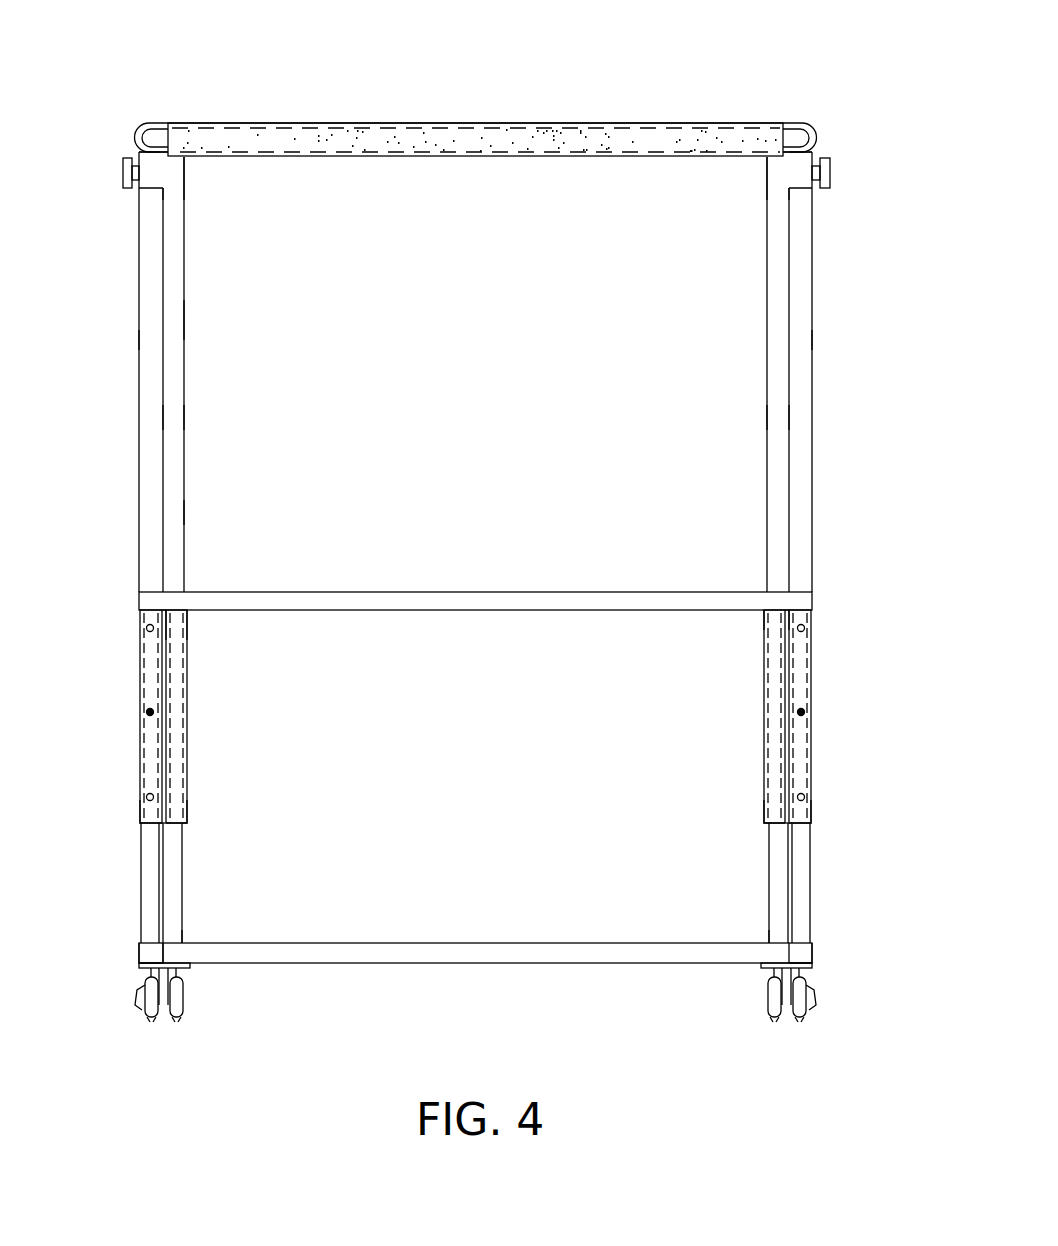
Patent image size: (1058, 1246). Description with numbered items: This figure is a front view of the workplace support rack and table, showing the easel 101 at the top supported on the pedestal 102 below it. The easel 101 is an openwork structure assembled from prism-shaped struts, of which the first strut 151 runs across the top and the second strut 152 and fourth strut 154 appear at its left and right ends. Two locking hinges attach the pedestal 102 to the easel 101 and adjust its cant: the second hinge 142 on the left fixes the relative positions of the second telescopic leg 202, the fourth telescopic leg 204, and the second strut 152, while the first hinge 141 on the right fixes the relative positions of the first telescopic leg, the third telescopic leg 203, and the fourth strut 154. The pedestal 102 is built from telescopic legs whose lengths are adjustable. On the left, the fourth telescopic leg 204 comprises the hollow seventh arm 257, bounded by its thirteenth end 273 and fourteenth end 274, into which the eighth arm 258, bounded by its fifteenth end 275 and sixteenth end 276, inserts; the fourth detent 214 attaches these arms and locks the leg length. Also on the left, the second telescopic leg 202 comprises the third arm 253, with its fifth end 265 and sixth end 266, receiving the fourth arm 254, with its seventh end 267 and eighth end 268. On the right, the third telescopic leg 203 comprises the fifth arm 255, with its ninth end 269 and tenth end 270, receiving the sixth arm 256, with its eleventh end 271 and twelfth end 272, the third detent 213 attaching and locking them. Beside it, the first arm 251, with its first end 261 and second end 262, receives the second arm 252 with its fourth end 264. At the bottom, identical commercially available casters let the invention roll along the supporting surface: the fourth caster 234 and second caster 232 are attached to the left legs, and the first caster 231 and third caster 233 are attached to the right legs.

The easel 101 is at (489, 122).
The first strut 151 is at (403, 122).
The second strut 152 is at (145, 125).
The fourth strut 154 is at (810, 125).
The thirteenth end 273 is at (143, 146).
The ninth end 269 is at (814, 148).
The second hinge 142 is at (125, 172).
The first hinge 141 is at (830, 178).
The fifth end 265 is at (178, 162).
The first end 261 is at (773, 162).
The pedestal 102 is at (185, 325).
The seventh arm 257 is at (140, 340).
The fifth arm 255 is at (812, 340).
The third arm 253 is at (175, 418).
The first arm 251 is at (776, 418).
The fourth telescopic leg 204 is at (140, 500).
The third telescopic leg 203 is at (812, 500).
The second telescopic leg 202 is at (186, 512).
The fifteenth end 275 is at (146, 615).
The seventh end 267 is at (180, 615).
The eleventh end 271 is at (808, 615).
The fourth detent 214 is at (150, 712).
The third detent 213 is at (803, 712).
The fourteenth end 274 is at (150, 822).
The sixth end 266 is at (180, 823).
The second end 262 is at (773, 823).
The tenth end 270 is at (808, 823).
The eighth arm 258 is at (141, 872).
The fourth arm 254 is at (184, 870).
The second arm 252 is at (769, 870).
The sixth arm 256 is at (810, 872).
The sixteenth end 276 is at (141, 942).
The eighth end 268 is at (184, 942).
The fourth end 264 is at (769, 942).
The twelfth end 272 is at (810, 942).
The fourth caster 234 is at (147, 1015).
The second caster 232 is at (178, 1015).
The first caster 231 is at (771, 1015).
The third caster 233 is at (805, 1015).